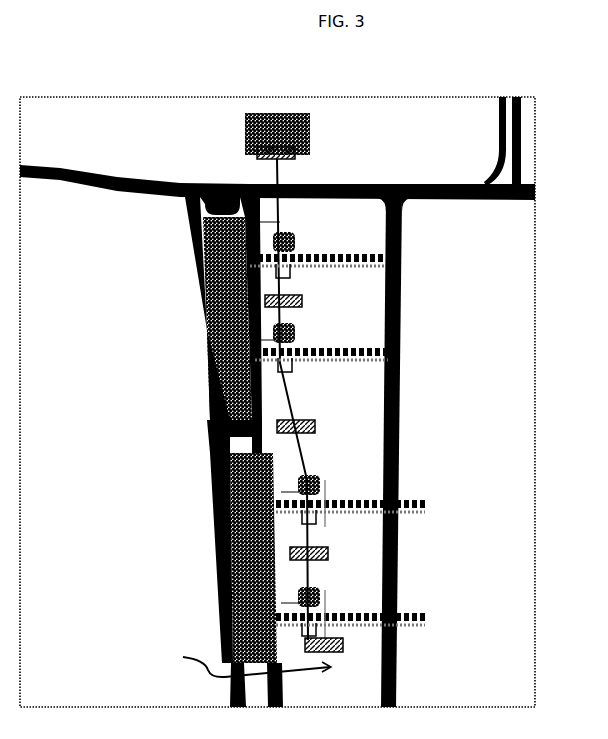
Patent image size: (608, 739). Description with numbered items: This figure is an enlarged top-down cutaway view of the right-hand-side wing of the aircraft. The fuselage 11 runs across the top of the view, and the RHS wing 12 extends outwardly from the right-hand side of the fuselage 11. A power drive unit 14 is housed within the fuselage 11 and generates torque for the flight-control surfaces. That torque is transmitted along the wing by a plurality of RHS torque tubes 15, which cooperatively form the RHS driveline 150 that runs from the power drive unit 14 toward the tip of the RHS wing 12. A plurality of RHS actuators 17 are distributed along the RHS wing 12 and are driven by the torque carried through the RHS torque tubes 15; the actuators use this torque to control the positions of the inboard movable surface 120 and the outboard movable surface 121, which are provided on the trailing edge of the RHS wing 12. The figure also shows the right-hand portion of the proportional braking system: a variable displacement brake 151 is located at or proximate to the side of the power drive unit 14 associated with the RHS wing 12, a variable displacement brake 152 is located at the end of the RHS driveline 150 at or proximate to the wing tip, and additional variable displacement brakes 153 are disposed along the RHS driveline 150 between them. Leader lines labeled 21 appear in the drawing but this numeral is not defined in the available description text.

The fuselage 11 is at (133, 160).
The RHS wing 12 is at (371, 238).
The power drive unit 14 is at (310, 137).
The RHS torque tubes 15 is at (186, 220).
The RHS actuators 17 is at (217, 513).
The connectors 21 is at (303, 265).
The inboard movable surface 120 is at (203, 377).
The outboard movable surface 121 is at (228, 615).
The RHS driveline 150 is at (239, 664).
The variable displacement brake 151 is at (255, 158).
The variable displacement brake 152 is at (327, 653).
The variable displacement brakes 153 is at (345, 570).